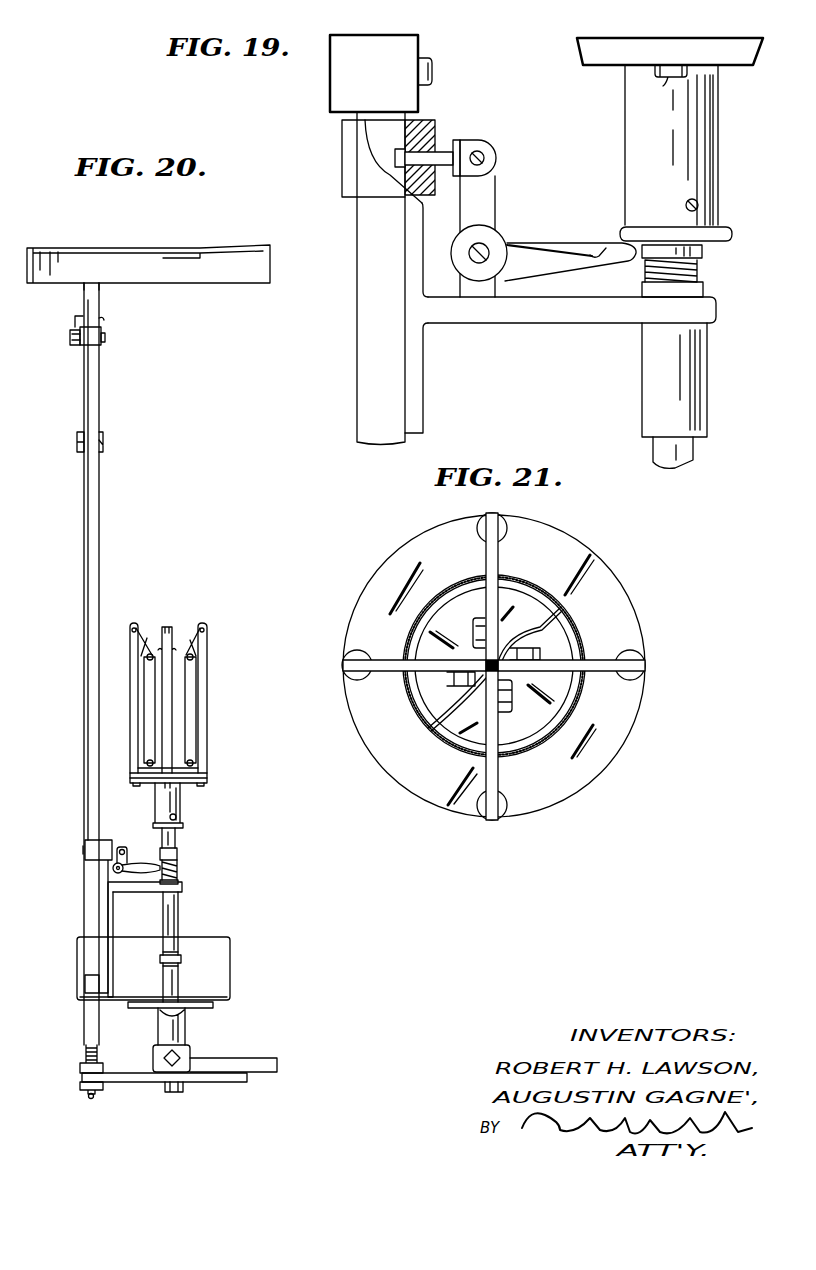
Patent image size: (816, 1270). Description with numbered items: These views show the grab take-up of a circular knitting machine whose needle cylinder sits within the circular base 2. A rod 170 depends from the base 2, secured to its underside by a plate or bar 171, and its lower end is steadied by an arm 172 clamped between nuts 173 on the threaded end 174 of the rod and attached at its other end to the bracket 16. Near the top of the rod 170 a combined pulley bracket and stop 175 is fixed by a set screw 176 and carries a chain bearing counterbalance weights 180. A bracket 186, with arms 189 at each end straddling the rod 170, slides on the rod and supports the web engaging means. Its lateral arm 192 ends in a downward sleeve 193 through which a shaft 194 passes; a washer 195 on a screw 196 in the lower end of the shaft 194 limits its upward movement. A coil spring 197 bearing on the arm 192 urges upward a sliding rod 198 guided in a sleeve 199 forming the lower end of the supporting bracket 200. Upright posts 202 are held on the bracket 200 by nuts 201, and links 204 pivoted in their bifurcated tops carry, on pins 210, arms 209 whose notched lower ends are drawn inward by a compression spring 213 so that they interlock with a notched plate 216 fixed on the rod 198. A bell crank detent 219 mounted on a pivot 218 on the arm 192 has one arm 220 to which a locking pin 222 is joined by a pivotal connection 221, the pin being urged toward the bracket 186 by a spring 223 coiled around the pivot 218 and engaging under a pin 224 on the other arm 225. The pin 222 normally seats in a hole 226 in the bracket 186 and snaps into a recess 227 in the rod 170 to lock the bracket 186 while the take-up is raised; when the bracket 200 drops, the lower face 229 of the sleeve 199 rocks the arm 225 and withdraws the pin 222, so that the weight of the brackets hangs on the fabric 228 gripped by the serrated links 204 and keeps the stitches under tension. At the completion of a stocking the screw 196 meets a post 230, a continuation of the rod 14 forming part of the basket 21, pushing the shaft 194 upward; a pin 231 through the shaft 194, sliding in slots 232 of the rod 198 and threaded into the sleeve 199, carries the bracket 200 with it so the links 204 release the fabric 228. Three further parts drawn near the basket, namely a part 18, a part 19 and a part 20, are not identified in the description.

In FIG. 20, the circular base 2 is at (148, 264).
In FIG. 20, the rod 14 is at (183, 1089).
In FIG. 20, the bracket 16 is at (270, 1062).
In FIG. 20, the rod 18 is at (185, 1028).
In FIG. 20, the block 19 is at (162, 1058).
In FIG. 20, the plate 20 is at (213, 1008).
In FIG. 20, the basket 21 is at (230, 975).
In FIG. 19, the rod 170 is at (381, 278).
In FIG. 20, the rod 170 is at (99, 528).
In FIG. 20, the plate or bar 171 is at (82, 287).
In FIG. 20, the arm 172 is at (245, 1083).
In FIG. 20, the nuts 173 is at (78, 1087).
In FIG. 20, the threaded end 174 is at (94, 1097).
In FIG. 19, the combined pulley bracket and stop 175 is at (374, 73).
In FIG. 20, the combined pulley bracket and stop 175 is at (103, 330).
In FIG. 19, the set screw 176 is at (432, 80).
In FIG. 20, the set screw 176 is at (105, 340).
In FIG. 20, the counterbalance weights 180 is at (103, 435).
In FIG. 19, the bracket 186 is at (423, 360).
In FIG. 20, the bracket 186 is at (113, 920).
In FIG. 20, the arms 189 is at (85, 852).
In FIG. 19, the arm 192 is at (572, 310).
In FIG. 20, the arm 192 is at (140, 893).
In FIG. 19, the sleeve 193 is at (707, 355).
In FIG. 20, the sleeve 193 is at (178, 913).
In FIG. 19, the shaft 194 is at (693, 458).
In FIG. 20, the shaft 194 is at (178, 866).
In FIG. 20, the washer 195 is at (160, 956).
In FIG. 20, the screw 196 is at (160, 963).
In FIG. 19, the coil spring 197 is at (697, 268).
In FIG. 20, the coil spring 197 is at (177, 872).
In FIG. 19, the sliding rod or shaft 198 is at (702, 251).
In FIG. 20, the sliding rod or shaft 198 is at (177, 854).
In FIG. 19, the sleeve 199 is at (718, 118).
In FIG. 20, the sleeve 199 is at (180, 808).
In FIG. 19, the supporting bracket 200 is at (670, 51).
In FIG. 20, the supporting bracket 200 is at (207, 778).
In FIG. 21, the supporting bracket 200 is at (632, 730).
In FIG. 19, the nuts 201 is at (669, 83).
In FIG. 20, the nuts 201 is at (172, 786).
In FIG. 20, the upright posts 202 is at (207, 742).
In FIG. 21, the upright posts 202 is at (632, 652).
In FIG. 20, the arms or links 204 is at (160, 633).
In FIG. 21, the arms or links 204 is at (498, 786).
In FIG. 20, the arms 209 is at (190, 706).
In FIG. 21, the arms 209 is at (505, 760).
In FIG. 21, the pins or screws 210 is at (512, 700).
In FIG. 21, the coil compression spring 213 is at (583, 705).
In FIG. 21, the plate 216 is at (459, 630).
In FIG. 19, the pivot 218 is at (489, 254).
In FIG. 19, the bell crank lever or detent 219 is at (455, 261).
In FIG. 20, the bell crank lever or detent 219 is at (160, 868).
In FIG. 19, the arm 220 is at (495, 196).
In FIG. 19, the pivotal connection 221 is at (484, 158).
In FIG. 19, the locking pin 222 is at (449, 149).
In FIG. 20, the locking pin 222 is at (122, 845).
In FIG. 19, the spring 223 is at (574, 249).
In FIG. 19, the pin 224 is at (597, 252).
In FIG. 19, the arm 225 is at (572, 269).
In FIG. 19, the hole 226 is at (430, 168).
In FIG. 19, the recess 227 is at (397, 153).
In FIG. 21, the fabric 228 is at (530, 626).
In FIG. 19, the lower face 229 is at (732, 237).
In FIG. 20, the post 230 is at (181, 960).
In FIG. 19, the pin or screw 231 is at (698, 203).
In FIG. 20, the pin or screw 231 is at (177, 818).
In FIG. 20, the slots 232 is at (175, 838).